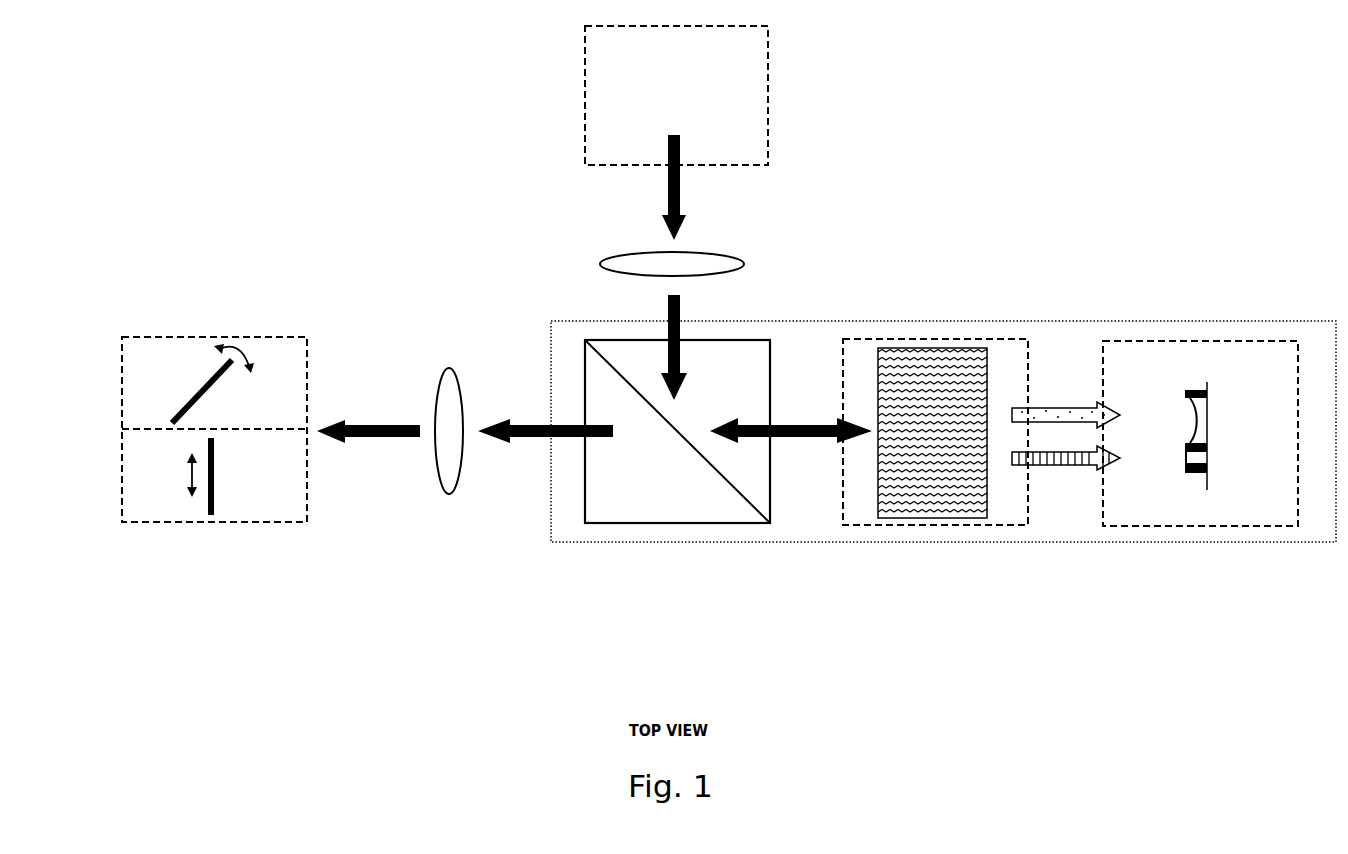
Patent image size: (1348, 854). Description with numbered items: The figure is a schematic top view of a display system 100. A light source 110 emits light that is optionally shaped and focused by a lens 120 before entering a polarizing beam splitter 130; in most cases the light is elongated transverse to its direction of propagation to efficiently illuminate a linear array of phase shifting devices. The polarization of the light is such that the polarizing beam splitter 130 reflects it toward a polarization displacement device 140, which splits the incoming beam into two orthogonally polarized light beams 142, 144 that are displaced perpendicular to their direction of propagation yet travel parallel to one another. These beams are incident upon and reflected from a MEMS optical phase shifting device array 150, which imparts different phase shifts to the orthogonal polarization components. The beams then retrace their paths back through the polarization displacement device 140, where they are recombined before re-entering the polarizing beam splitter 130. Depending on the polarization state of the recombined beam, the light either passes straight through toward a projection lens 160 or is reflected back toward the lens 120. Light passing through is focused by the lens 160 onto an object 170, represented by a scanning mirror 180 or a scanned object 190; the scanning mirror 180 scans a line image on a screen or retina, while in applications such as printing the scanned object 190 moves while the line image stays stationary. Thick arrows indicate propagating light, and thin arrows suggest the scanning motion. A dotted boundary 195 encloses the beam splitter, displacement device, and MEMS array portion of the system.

The display system 100 is at (290, 149).
The light source 110 is at (778, 137).
The lens 120 is at (742, 248).
The polarizing beam splitter 130 is at (777, 330).
The polarization displacement device 140 is at (952, 330).
The light beam 142 is at (1062, 405).
The light beam 144 is at (1072, 472).
The MEMS optical phase shifting device array 150 is at (1205, 333).
The lens 160 is at (457, 363).
The object 170 is at (283, 327).
The scanning mirror 180 is at (137, 413).
The scanned object 190 is at (137, 507).
The dotted boundary 195 is at (573, 540).